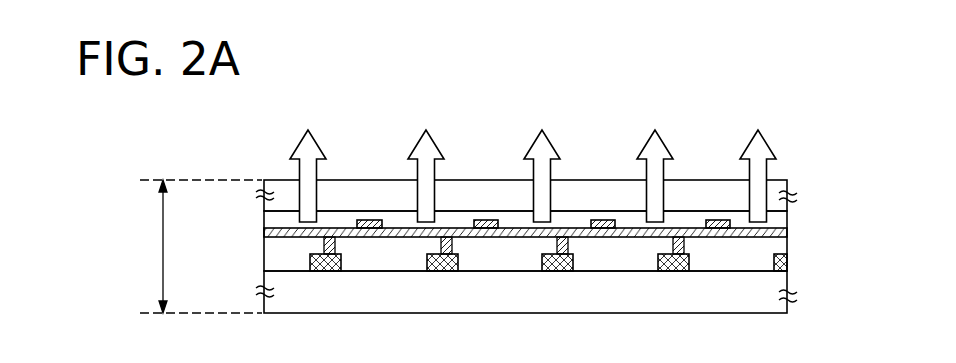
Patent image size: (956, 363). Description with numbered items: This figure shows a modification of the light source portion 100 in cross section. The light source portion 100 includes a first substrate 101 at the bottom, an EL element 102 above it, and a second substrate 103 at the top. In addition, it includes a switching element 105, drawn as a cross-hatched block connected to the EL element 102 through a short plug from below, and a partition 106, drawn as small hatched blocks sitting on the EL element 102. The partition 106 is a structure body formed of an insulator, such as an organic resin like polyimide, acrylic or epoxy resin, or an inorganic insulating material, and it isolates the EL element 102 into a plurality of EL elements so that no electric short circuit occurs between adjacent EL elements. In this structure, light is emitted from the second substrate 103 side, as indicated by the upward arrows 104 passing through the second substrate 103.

The light source portion 100 is at (188, 246).
The first substrate 101 is at (263, 304).
The EL element 102 is at (263, 229).
The second substrate 103 is at (278, 190).
The arrows 104 is at (296, 146).
The switching element 105 is at (310, 261).
The partition 106 is at (362, 220).